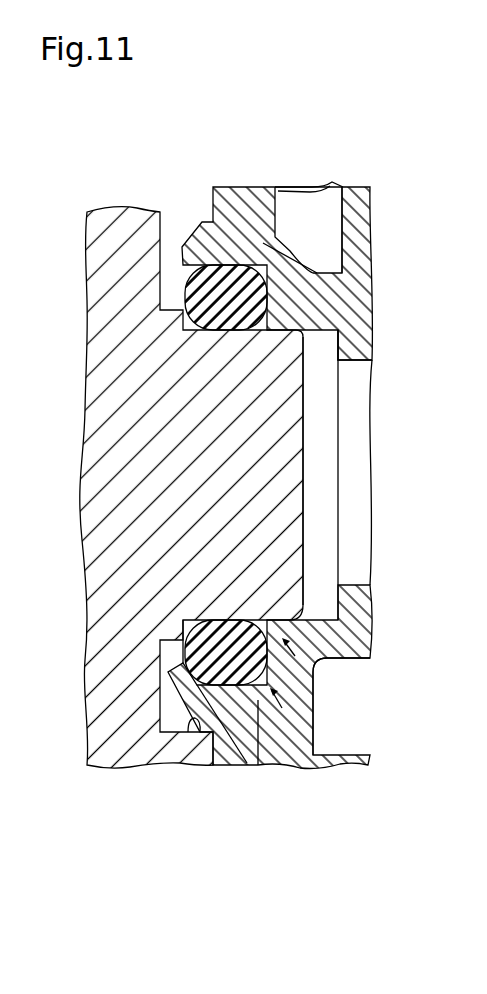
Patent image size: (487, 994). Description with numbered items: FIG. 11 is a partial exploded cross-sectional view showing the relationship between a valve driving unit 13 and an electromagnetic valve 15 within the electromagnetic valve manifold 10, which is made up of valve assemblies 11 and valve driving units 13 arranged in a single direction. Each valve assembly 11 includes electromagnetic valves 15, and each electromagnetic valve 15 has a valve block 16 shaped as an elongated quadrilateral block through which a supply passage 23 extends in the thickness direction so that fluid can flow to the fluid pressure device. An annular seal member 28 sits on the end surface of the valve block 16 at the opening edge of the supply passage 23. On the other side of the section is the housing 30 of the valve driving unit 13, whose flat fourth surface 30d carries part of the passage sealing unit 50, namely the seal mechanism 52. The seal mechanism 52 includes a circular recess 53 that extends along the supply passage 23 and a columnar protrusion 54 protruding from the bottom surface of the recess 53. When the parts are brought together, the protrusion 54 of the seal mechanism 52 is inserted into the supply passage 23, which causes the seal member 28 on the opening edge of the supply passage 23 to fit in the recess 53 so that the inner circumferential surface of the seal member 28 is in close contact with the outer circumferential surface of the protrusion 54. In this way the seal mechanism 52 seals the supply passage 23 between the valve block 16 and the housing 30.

The electromagnetic valve manifold 10 is at (155, 178).
The valve assembly 11 is at (301, 155).
The valve driving unit 13 is at (110, 212).
The electromagnetic valve 15 is at (351, 186).
The valve block 16 is at (352, 268).
The supply passage 23 is at (320, 497).
The seal member 28 is at (232, 670).
The housing 30 is at (245, 187).
The fourth surface 30d is at (233, 763).
The passage sealing unit 50 is at (318, 671).
The seal mechanism 52 is at (315, 743).
The recess 53 is at (193, 723).
The protrusion 54 is at (253, 443).